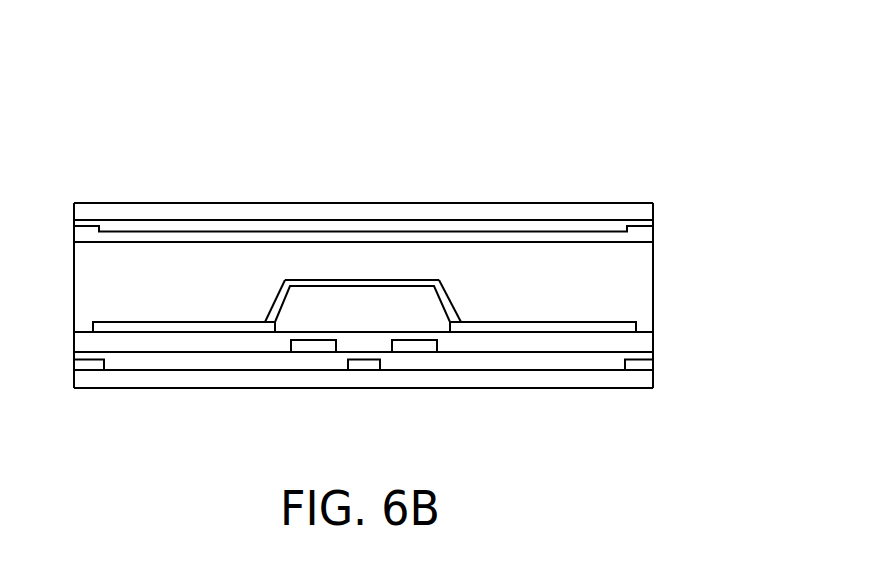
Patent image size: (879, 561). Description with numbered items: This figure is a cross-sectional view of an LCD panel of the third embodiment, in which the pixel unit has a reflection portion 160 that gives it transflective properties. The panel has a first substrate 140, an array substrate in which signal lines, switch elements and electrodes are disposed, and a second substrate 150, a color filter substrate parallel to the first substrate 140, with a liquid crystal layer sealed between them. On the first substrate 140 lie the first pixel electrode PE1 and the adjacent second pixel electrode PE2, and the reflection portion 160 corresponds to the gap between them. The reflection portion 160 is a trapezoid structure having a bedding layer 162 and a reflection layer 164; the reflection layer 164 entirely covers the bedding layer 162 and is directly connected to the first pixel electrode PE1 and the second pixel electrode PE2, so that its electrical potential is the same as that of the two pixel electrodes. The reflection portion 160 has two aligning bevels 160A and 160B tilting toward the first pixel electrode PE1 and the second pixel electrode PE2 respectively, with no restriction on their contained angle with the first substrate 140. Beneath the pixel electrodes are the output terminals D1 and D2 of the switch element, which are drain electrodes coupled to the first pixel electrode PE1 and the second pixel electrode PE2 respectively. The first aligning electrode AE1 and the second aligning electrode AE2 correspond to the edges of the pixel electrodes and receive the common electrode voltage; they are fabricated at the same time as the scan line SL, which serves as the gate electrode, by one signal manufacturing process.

The reflection portion 160 is at (353, 180).
The aligning bevel 160B is at (269, 285).
The bedding layer 162 is at (317, 295).
The reflection layer 164 is at (388, 280).
The aligning bevel 160A is at (460, 209).
The second substrate 150 is at (669, 223).
The first substrate 140 is at (669, 364).
The second pixel electrode PE2 is at (166, 327).
The first pixel electrode PE1 is at (526, 327).
The output terminal D2 is at (297, 343).
The output terminal D1 is at (423, 345).
The scan line SL is at (356, 363).
The second aligning electrode AE2 is at (85, 363).
The first aligning electrode AE1 is at (639, 363).